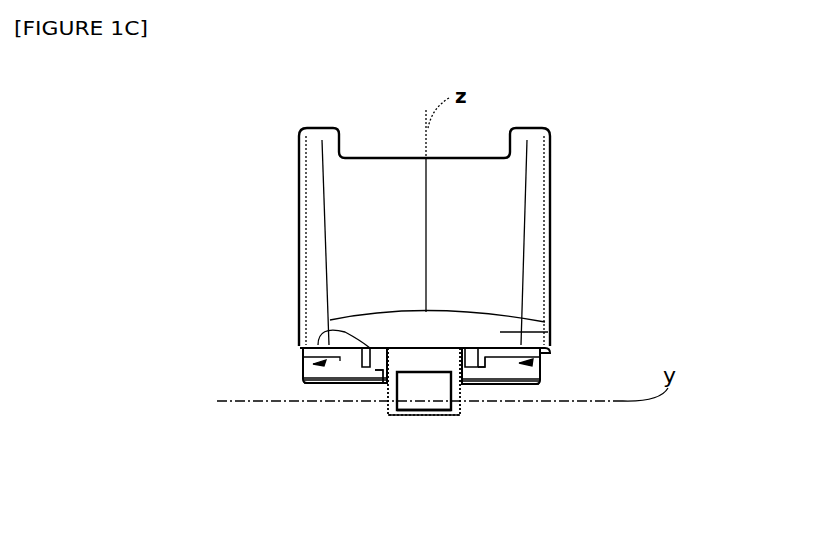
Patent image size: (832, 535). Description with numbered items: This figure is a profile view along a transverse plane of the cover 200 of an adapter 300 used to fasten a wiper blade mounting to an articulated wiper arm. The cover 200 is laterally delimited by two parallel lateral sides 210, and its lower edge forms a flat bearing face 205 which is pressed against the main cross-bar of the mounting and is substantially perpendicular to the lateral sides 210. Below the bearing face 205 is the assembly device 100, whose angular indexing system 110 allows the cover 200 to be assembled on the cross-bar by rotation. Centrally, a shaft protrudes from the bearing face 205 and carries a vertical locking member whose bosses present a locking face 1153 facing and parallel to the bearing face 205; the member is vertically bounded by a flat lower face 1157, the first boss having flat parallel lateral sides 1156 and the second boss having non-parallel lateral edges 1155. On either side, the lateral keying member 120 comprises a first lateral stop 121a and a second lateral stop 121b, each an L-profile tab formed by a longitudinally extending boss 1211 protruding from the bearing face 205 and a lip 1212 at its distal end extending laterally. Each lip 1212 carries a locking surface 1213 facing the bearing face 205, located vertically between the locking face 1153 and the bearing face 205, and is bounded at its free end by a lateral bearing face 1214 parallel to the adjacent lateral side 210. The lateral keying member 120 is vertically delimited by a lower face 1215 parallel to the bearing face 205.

The cover 200 is at (482, 210).
The adapter 300 is at (608, 92).
The lateral sides 210 is at (300, 213).
The bearing face 205 is at (482, 347).
The locking face 1153 is at (455, 347).
The lateral bearing face 1214 is at (372, 348).
The locking surface 1213 is at (375, 347).
The assembly device 100 is at (424, 425).
The lateral keying member 120 is at (424, 358).
The first lateral stop 121a is at (548, 368).
The second lateral stop 121b is at (305, 350).
The angular indexing system 110 is at (389, 418).
The longitudinally extending boss 1211 is at (305, 380).
The lower face 1215 is at (308, 386).
The lip 1212 is at (374, 382).
The lateral edges 1155 is at (386, 392).
The lateral sides 1156 is at (392, 416).
The lower face 1157 is at (420, 418).